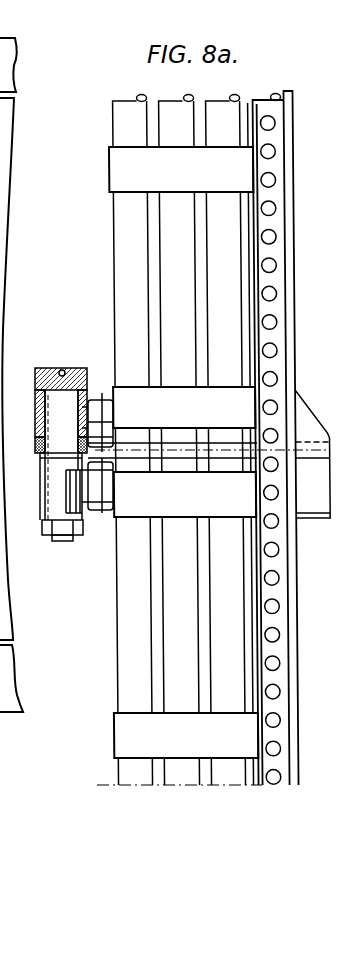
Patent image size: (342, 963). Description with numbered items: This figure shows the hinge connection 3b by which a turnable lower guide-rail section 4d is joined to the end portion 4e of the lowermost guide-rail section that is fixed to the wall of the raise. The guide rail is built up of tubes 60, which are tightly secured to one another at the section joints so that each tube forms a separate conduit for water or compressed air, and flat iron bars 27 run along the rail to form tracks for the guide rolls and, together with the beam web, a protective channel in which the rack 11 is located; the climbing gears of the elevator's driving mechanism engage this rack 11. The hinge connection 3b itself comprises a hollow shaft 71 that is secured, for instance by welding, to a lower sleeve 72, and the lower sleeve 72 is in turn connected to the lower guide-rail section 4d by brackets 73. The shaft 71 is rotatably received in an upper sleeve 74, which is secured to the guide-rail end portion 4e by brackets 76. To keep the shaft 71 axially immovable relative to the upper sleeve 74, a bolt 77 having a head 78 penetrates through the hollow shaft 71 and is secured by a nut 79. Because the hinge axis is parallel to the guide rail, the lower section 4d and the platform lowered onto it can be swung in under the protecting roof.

The tubes 60 is at (218, 245).
The end portion of the lowermost guide-rail section 4e is at (107, 302).
The lower guide-rail section 4d is at (107, 624).
The rack 11 is at (275, 293).
The flat iron bars 27 is at (278, 334).
The head 78 is at (63, 368).
The shaft 71 is at (44, 408).
The upper sleeve 74 is at (33, 447).
The lower sleeve 72 is at (53, 481).
The hinge 3b is at (33, 509).
The bolt 77 is at (63, 545).
The nut 79 is at (78, 538).
The brackets 76 is at (103, 426).
The brackets 73 is at (88, 507).